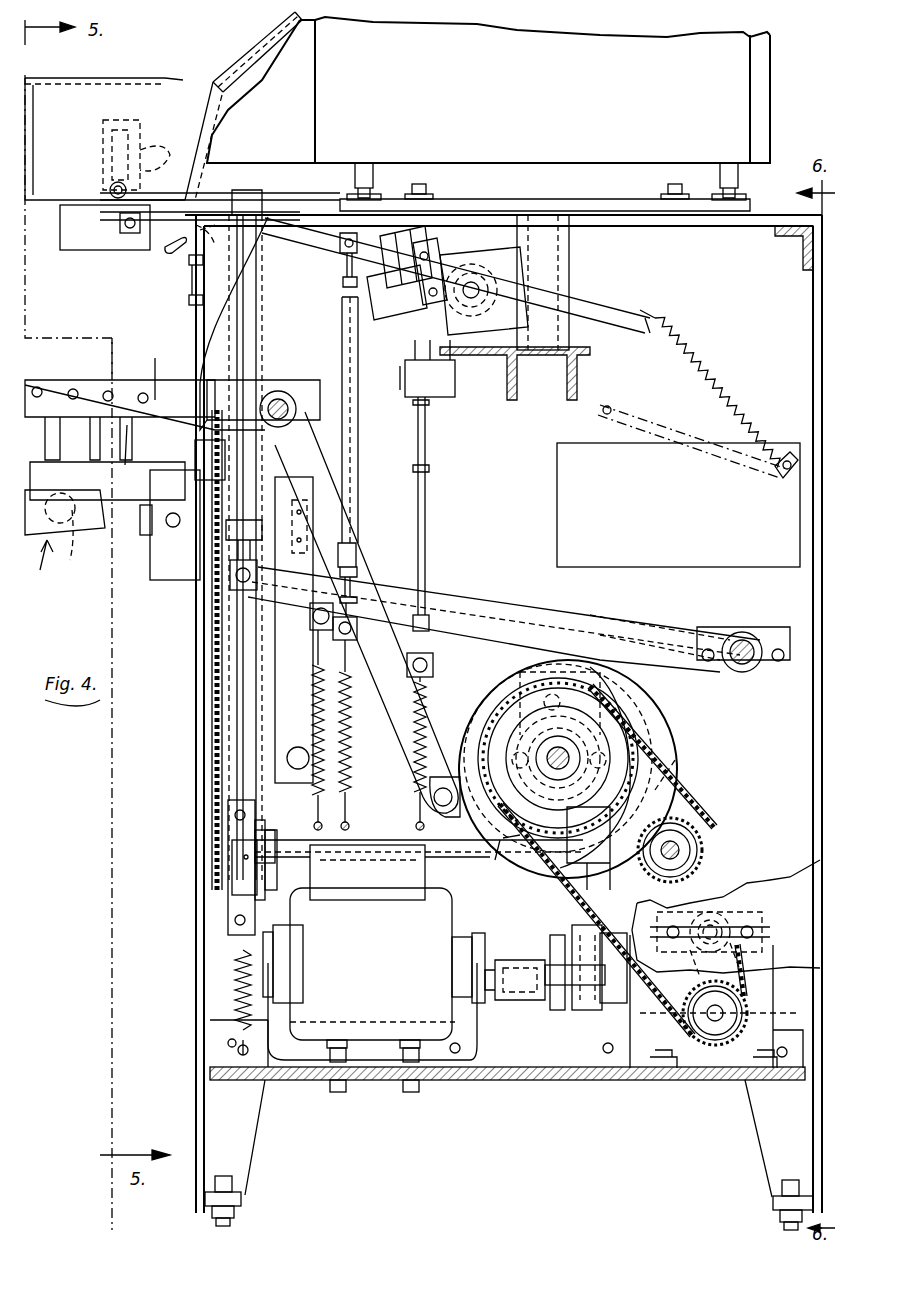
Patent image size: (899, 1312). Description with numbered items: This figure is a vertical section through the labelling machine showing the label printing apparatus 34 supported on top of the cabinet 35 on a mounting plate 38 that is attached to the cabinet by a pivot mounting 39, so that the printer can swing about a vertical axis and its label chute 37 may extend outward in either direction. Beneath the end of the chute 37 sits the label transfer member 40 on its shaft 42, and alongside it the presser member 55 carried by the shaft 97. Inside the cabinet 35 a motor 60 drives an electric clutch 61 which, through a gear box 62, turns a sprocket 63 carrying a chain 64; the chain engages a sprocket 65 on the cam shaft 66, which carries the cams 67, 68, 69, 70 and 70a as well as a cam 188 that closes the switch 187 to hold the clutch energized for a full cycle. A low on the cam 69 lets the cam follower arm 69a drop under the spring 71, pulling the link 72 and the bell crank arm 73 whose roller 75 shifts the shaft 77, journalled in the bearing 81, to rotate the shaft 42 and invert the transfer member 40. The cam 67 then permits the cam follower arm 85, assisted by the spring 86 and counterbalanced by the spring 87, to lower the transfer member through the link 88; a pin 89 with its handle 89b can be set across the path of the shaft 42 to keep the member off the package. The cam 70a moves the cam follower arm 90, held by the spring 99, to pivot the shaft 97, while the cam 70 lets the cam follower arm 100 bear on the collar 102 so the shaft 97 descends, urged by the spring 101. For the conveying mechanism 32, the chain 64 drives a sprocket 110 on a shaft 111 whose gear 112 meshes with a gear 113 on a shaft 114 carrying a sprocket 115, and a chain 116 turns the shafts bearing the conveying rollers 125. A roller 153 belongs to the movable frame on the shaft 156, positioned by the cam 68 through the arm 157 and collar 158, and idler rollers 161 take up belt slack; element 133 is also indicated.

The conveying mechanism 32 is at (40, 567).
The label printing apparatus 34 is at (690, 126).
The cabinet 35 is at (196, 995).
The label chute 37 is at (248, 55).
The mounting plate 38 is at (555, 205).
The pivot mounting 39 is at (570, 247).
The label transfer member 40 is at (105, 160).
The shaft 42 is at (318, 240).
The presser member 55 is at (85, 243).
The motor 60 is at (380, 1035).
The electric clutch 61 is at (555, 1005).
The gear box 62 is at (760, 1012).
The sprocket 63 is at (708, 1045).
The chain 64 is at (580, 905).
The sprocket 65 is at (610, 745).
The cam shaft 66 is at (570, 770).
The cam 67 is at (490, 880).
The cam 68 is at (520, 850).
The cam 69 is at (485, 730).
The cam follower arm 69a is at (480, 678).
The cam 70 is at (652, 703).
The cam 70a is at (715, 750).
The spring 71 is at (414, 797).
The link 72 is at (425, 528).
The arm 73 is at (405, 364).
The roller 75 is at (440, 262).
The shaft 77 is at (485, 270).
The bearing 81 is at (490, 340).
The cam follower arm 85 is at (312, 670).
The spring 86 is at (345, 775).
The spring 87 is at (740, 380).
The link 88 is at (357, 445).
The pin 89 is at (215, 250).
The handle 89b is at (172, 252).
The cam follower arm 90 is at (318, 630).
The shaft 97 is at (245, 632).
The spring 99 is at (312, 705).
The cam follower arm 100 is at (462, 602).
The spring 101 is at (240, 968).
The collar 102 is at (230, 598).
The sprocket 110 is at (725, 860).
The shaft 111 is at (690, 835).
The gear 112 is at (680, 842).
The gear 113 is at (660, 875).
The shaft 114 is at (470, 860).
The sprocket 115 is at (228, 898).
The chain 116 is at (212, 765).
The conveying rollers 125 is at (132, 450).
The pin 133 is at (155, 372).
The roller 153 is at (150, 380).
The shaft 156 is at (285, 395).
The arm 157 is at (397, 710).
The collar 158 is at (270, 375).
The idler rollers 161 is at (66, 530).
The switch 187 is at (520, 662).
The cam 188 is at (505, 706).